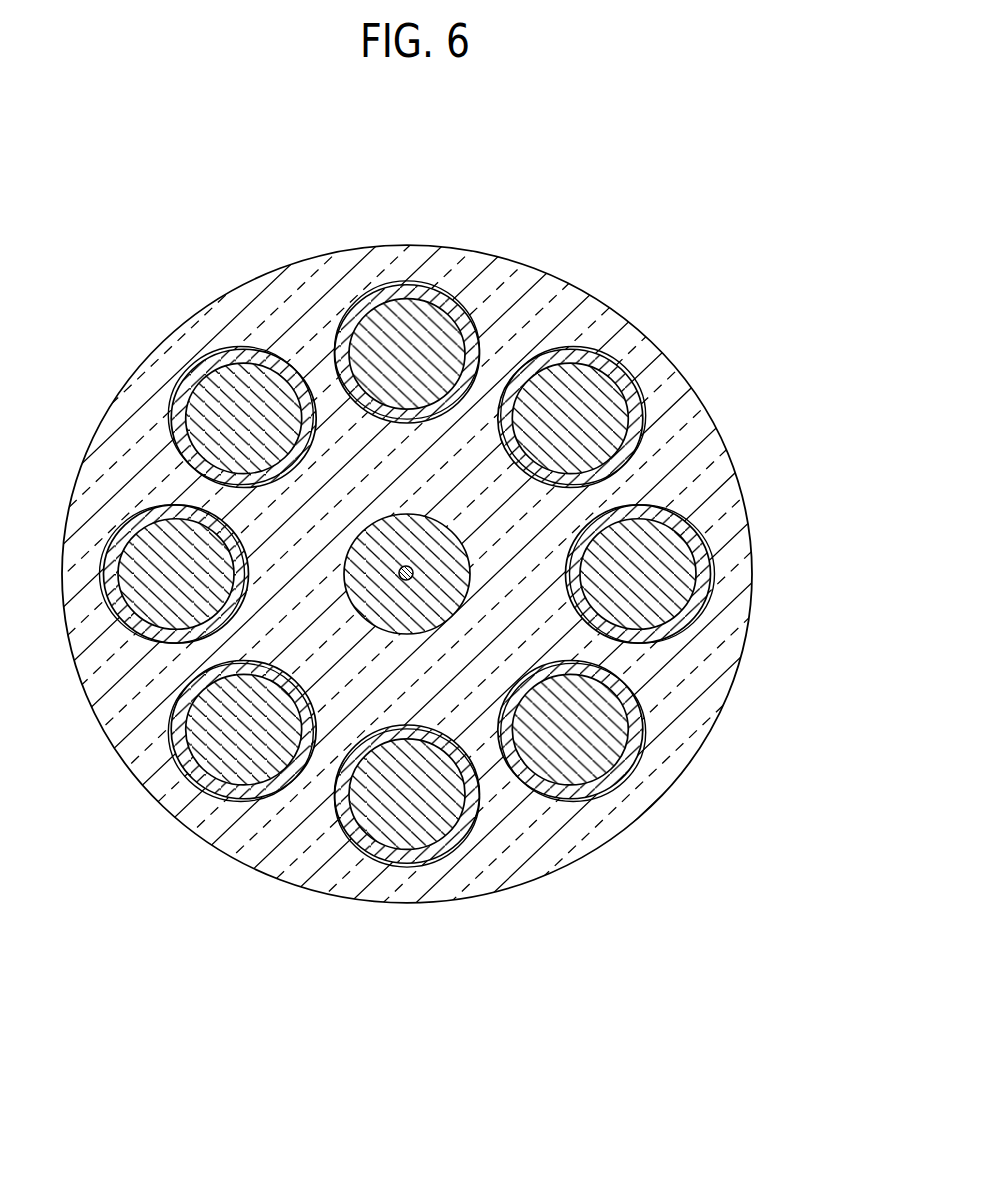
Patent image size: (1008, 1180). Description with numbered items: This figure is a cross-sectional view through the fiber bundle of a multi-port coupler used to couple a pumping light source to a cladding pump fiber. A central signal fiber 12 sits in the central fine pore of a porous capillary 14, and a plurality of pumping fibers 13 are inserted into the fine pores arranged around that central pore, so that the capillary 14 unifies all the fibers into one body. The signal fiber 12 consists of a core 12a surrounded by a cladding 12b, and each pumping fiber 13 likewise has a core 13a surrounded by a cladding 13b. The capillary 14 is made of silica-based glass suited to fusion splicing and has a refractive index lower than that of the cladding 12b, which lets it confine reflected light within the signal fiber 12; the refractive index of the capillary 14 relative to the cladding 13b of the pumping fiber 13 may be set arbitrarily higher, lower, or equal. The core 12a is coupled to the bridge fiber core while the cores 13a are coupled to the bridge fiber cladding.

The signal fiber 12 is at (488, 758).
The core of the signal fiber 12a is at (475, 767).
The cladding of the signal fiber 12b is at (440, 602).
The pumping fiber 13 is at (469, 496).
The core of the pumping fiber 13a is at (448, 328).
The cladding of the pumping fiber 13b is at (410, 287).
The capillary 14 is at (706, 498).